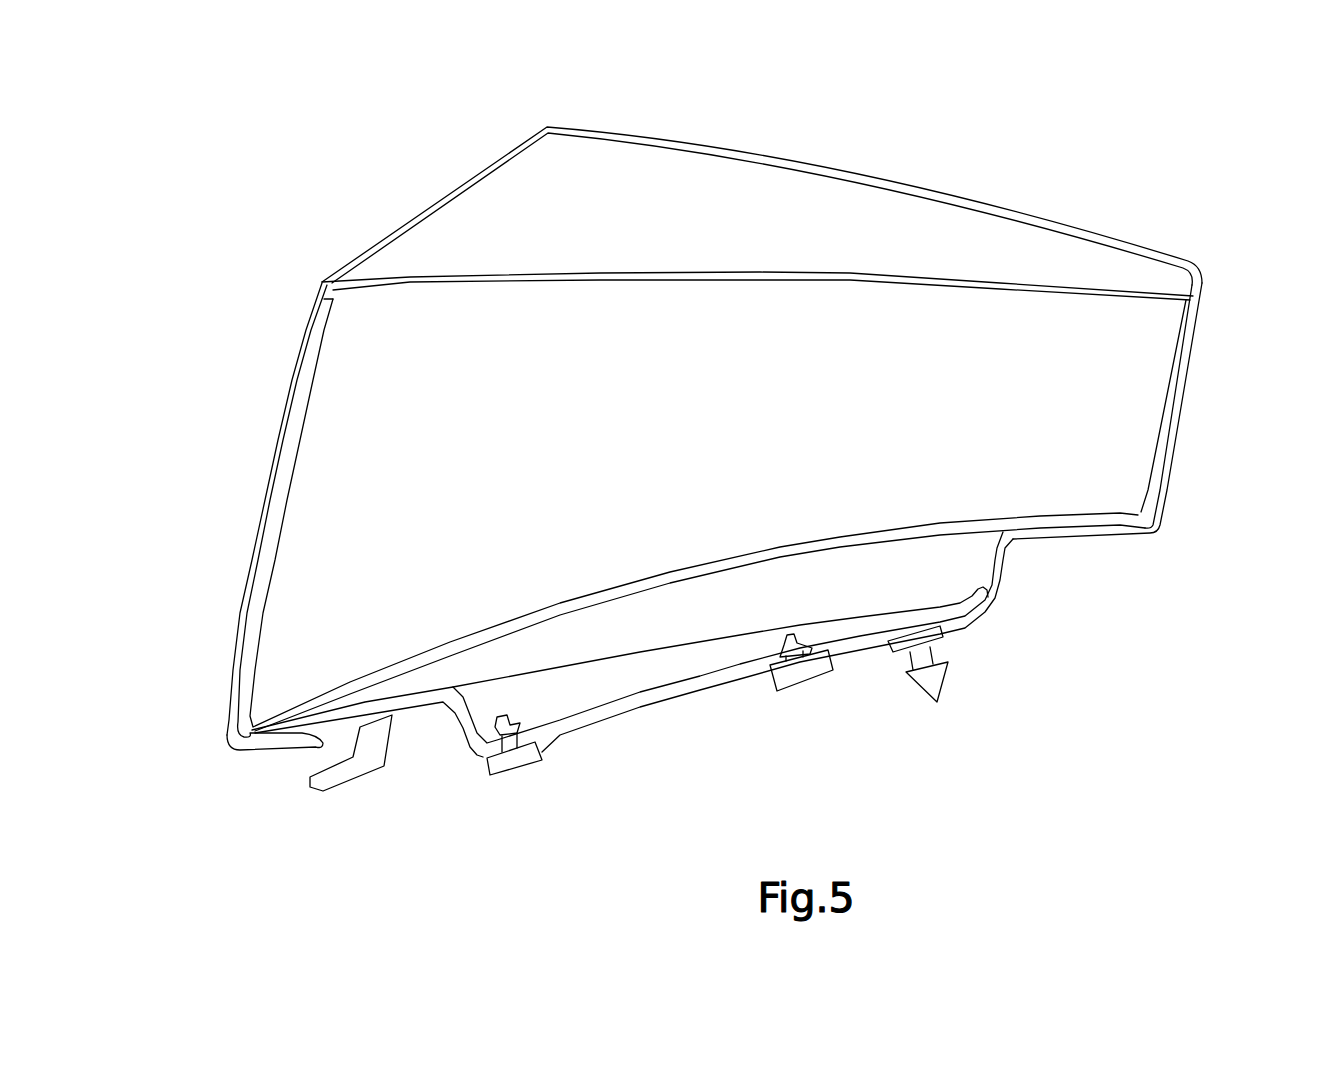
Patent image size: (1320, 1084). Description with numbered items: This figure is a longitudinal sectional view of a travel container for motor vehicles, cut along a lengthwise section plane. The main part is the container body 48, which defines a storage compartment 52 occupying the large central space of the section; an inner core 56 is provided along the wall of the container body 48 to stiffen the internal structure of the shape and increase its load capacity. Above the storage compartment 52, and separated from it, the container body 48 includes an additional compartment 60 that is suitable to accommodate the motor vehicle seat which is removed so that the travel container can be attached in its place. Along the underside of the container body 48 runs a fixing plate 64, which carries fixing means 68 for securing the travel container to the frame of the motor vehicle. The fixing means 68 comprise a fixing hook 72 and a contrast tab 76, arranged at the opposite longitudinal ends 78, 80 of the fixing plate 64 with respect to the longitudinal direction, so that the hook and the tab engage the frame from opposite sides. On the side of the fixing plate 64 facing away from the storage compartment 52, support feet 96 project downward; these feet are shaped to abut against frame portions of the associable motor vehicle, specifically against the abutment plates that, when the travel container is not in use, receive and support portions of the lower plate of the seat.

The container body 48 is at (292, 381).
The storage compartment 52 is at (1010, 420).
The inner core 56 is at (253, 563).
The additional compartment 60 is at (773, 214).
The fixing plate 64 is at (652, 710).
The fixing means 68 is at (704, 753).
The fixing hook 72 is at (942, 683).
The contrast tab 76 is at (324, 793).
The longitudinal end 78 is at (240, 774).
The longitudinal end 80 is at (1078, 578).
The support feet 96 is at (515, 773).